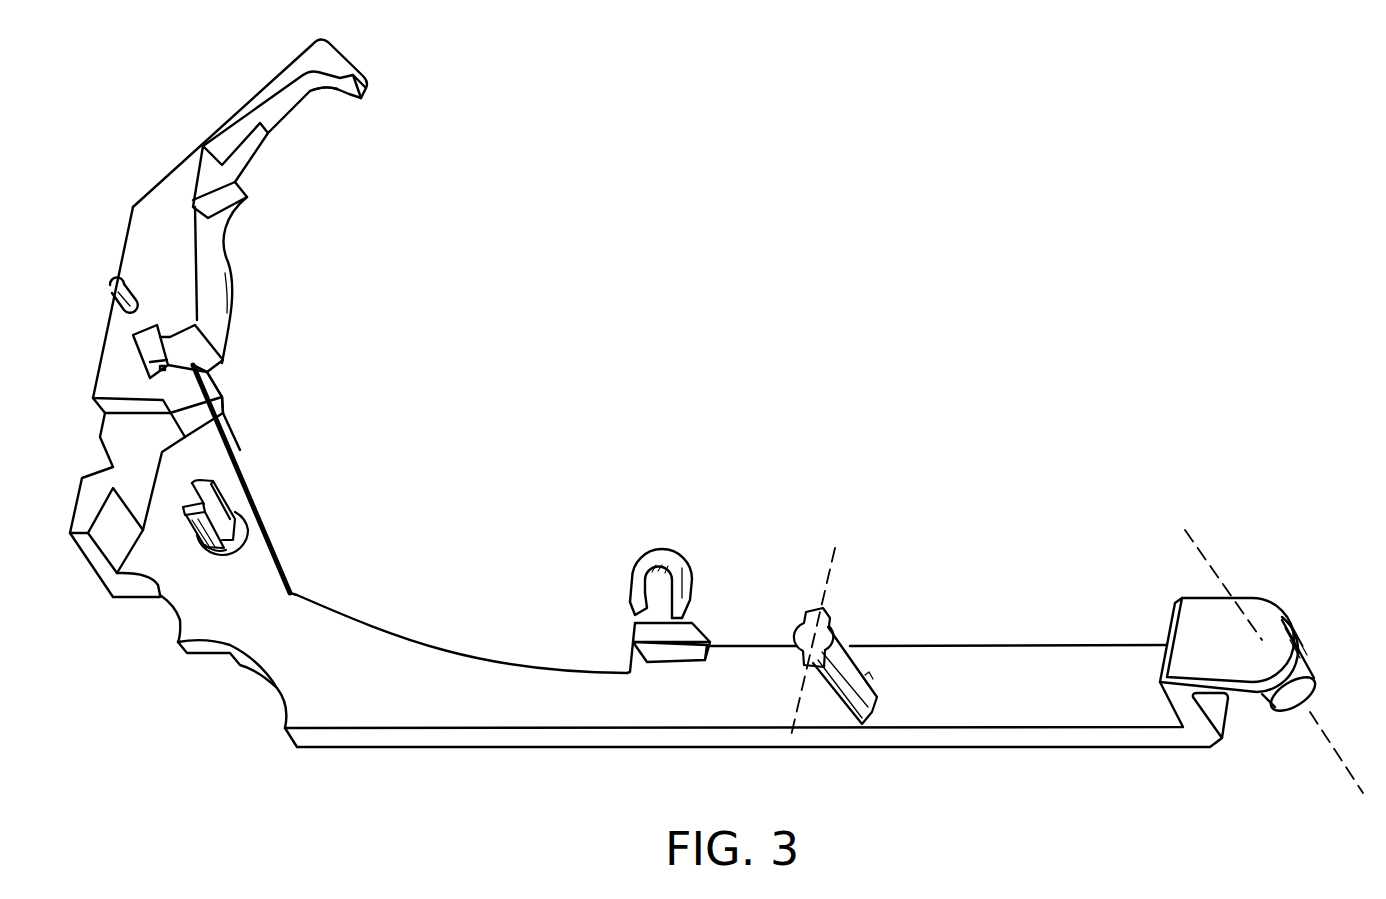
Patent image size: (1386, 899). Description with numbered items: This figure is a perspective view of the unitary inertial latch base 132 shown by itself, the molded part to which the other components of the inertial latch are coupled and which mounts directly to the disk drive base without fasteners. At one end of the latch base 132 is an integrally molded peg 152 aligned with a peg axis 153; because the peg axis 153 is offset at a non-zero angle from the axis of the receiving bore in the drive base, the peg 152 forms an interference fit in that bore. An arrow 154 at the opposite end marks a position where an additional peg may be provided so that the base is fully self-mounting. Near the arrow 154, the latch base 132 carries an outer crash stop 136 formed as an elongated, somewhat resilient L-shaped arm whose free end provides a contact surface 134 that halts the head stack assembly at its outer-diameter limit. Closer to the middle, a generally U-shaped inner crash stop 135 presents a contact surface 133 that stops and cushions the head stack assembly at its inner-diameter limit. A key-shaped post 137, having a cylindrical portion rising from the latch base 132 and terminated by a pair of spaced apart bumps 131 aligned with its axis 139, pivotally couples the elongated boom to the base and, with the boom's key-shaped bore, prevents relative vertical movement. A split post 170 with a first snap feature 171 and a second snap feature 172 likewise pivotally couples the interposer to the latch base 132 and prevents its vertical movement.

The arrow 154 is at (117, 212).
The outer crash stop 136 is at (343, 53).
The contact surface 134 is at (337, 90).
The first snap feature 171 is at (207, 473).
The split post 170 is at (213, 498).
The second snap feature 172 is at (180, 510).
The contact surface 133 is at (632, 578).
The inner crash stop 135 is at (673, 588).
The spaced apart bumps 131 is at (813, 610).
The axis of the key-shaped post 139 is at (823, 587).
The key-shaped post 137 is at (840, 640).
The inertial latch base 132 is at (1008, 658).
The integrally molded peg 152 is at (1307, 667).
The peg axis 153 is at (1340, 757).